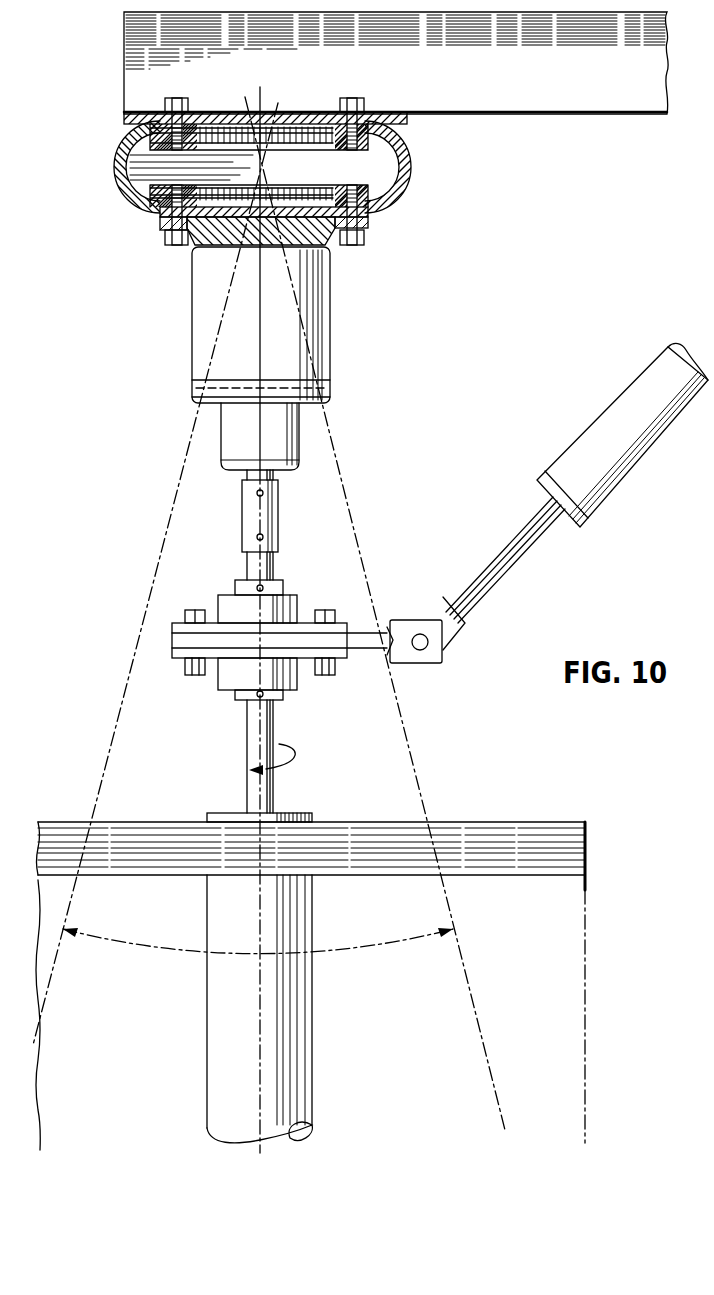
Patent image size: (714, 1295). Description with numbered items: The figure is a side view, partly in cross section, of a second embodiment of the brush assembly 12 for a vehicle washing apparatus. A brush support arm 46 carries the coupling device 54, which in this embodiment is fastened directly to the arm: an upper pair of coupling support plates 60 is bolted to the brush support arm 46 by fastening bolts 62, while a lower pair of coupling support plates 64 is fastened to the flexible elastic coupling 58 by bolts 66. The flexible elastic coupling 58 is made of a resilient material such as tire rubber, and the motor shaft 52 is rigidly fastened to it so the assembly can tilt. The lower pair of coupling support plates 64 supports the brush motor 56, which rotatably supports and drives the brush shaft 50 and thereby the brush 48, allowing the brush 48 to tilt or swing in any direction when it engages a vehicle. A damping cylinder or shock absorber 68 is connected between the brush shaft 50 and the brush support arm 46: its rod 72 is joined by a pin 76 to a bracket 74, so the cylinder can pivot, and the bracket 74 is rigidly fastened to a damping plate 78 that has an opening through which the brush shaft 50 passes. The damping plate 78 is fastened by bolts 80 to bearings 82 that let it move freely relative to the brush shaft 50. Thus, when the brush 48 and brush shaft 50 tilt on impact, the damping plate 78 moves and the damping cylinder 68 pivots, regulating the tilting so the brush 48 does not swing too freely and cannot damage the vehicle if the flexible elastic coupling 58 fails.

The brush assembly 12 is at (552, 820).
The brush support arm 46 is at (578, 108).
The brush 48 is at (455, 823).
The brush shaft 50 is at (270, 566).
The motor shaft 52 is at (245, 476).
The coupling device 54 is at (420, 165).
The brush motor 56 is at (205, 325).
The flexible elastic coupling 58 is at (120, 147).
The upper pair of coupling support plates 60 is at (224, 132).
The fastening bolts 62 is at (172, 100).
The lower pair of coupling support plates 64 is at (296, 205).
The bolts 66 is at (173, 245).
The damping cylinder or shock absorber 68 is at (590, 440).
The rod 72 is at (515, 557).
The bracket 74 is at (405, 656).
The pin 76 is at (414, 636).
The damping plate 78 is at (371, 648).
The bolts 80 is at (195, 609).
The bearings 82 is at (225, 609).